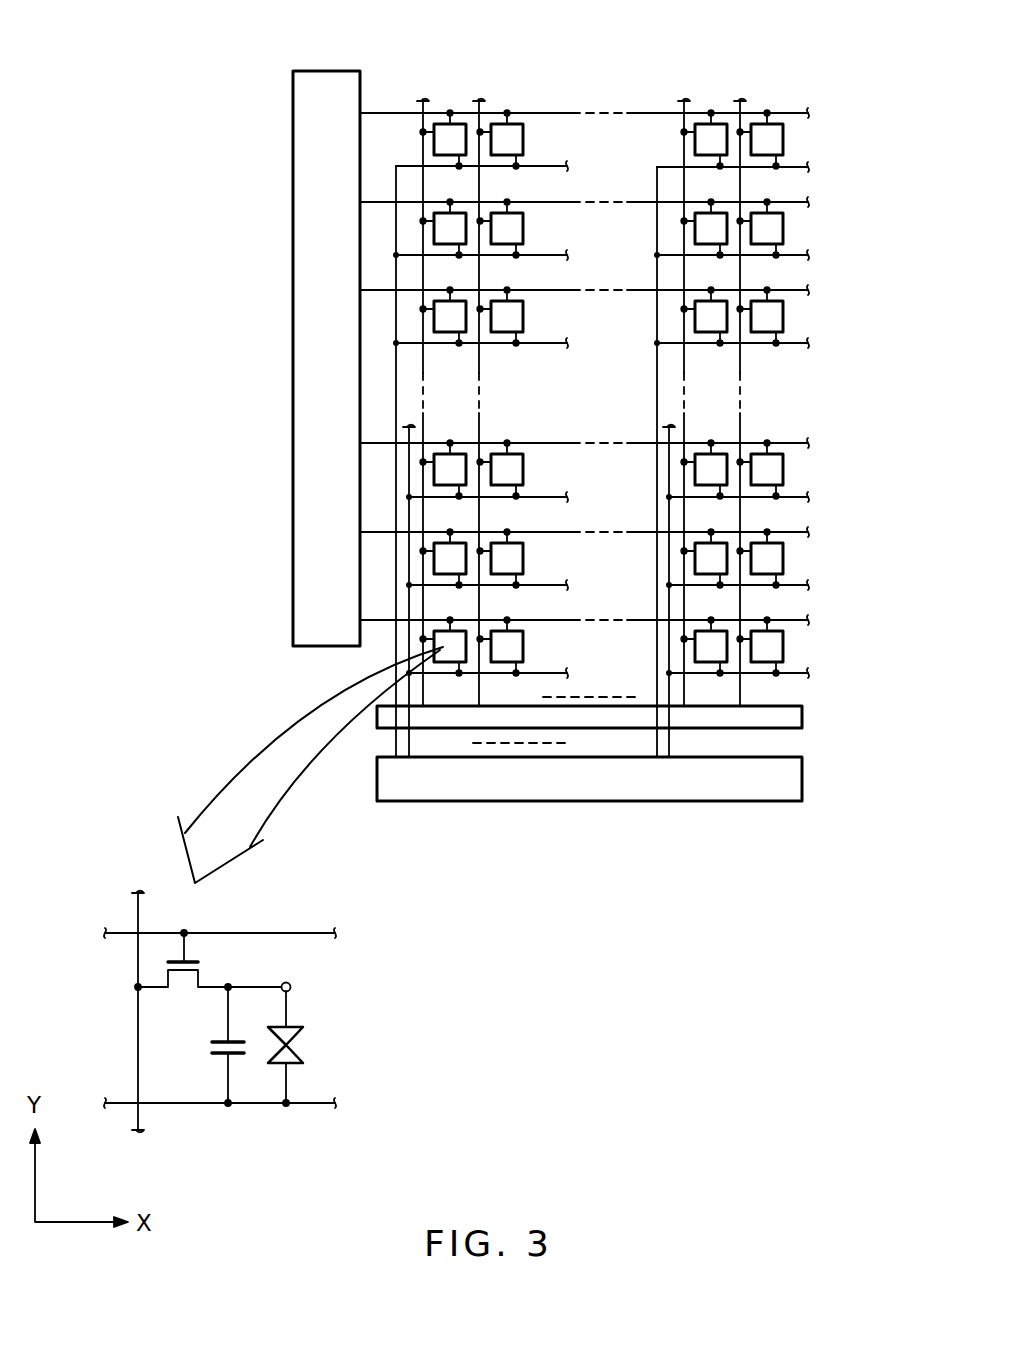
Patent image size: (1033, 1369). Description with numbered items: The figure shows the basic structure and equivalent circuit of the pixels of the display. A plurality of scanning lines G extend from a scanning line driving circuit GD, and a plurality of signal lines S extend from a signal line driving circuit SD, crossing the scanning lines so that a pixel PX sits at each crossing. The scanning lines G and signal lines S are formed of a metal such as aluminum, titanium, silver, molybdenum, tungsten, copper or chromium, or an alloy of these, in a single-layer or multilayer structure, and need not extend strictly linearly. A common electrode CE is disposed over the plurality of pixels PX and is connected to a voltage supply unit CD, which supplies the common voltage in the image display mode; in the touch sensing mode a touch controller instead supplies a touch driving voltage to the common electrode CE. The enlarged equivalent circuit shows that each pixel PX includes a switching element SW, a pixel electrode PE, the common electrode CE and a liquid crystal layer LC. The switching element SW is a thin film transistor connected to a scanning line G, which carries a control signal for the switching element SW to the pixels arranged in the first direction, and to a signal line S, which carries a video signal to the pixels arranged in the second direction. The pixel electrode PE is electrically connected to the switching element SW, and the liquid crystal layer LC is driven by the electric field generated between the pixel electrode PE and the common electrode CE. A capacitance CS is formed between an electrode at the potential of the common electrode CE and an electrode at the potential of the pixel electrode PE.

The scanning line driving circuit GD is at (330, 70).
The signal line driving circuit SD is at (803, 718).
The voltage supply unit CD is at (803, 783).
The scanning line G is at (797, 113).
The signal line S is at (420, 100).
The common electrode CE is at (698, 167).
The pixel PX is at (523, 137).
The switching element SW is at (212, 975).
The pixel electrode PE is at (291, 987).
The capacitance CS is at (208, 1045).
The liquid crystal layer LC is at (307, 1047).